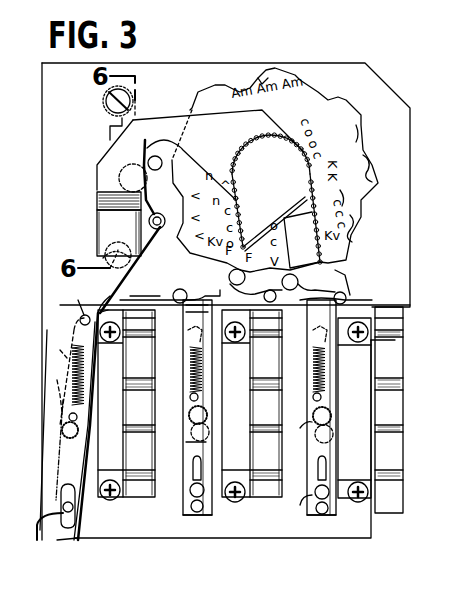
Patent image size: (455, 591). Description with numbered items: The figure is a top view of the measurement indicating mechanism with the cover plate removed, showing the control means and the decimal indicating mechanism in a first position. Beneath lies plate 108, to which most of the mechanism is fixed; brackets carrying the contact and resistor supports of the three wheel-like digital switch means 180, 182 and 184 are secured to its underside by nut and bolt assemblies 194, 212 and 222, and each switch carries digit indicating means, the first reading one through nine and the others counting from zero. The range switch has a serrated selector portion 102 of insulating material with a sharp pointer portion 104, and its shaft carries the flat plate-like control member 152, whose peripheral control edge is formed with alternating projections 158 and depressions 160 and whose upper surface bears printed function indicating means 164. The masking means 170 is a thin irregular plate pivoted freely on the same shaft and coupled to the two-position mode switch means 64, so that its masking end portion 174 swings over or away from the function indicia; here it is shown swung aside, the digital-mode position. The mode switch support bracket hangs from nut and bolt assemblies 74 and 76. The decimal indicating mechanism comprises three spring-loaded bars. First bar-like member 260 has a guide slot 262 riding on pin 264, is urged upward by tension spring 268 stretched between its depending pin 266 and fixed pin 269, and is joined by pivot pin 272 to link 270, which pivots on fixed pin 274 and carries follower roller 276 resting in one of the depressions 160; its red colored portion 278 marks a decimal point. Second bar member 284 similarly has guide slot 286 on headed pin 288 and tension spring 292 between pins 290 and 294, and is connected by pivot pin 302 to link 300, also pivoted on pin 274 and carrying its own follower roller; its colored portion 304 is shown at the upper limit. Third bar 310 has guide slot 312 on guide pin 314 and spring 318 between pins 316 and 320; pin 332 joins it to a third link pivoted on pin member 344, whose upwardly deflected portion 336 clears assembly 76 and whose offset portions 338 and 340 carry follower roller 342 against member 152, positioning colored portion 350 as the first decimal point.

The mode switch means 64 is at (90, 206).
The nut and bolt assembly 74 is at (100, 110).
The nut and bolt assembly 76 is at (92, 253).
The selector portion 102 is at (268, 180).
The pointer portion 104 is at (352, 508).
The plate 108 is at (403, 127).
The flat plate-like member 152 is at (300, 70).
The projections 158 is at (374, 168).
The depressions 160 is at (364, 124).
The notch 164 is at (262, 82).
The masking means 170 is at (162, 118).
The masking end portion 174 is at (302, 235).
The digital switch means 180 is at (122, 520).
The digital switch means 182 is at (254, 520).
The digital switch means 184 is at (390, 518).
The nut and bolt assemblies 194 is at (392, 342).
The nut and bolt assemblies 212 is at (246, 340).
The nut and bolt assemblies 222 is at (100, 494).
The first bar-like member 260 is at (334, 308).
The guide slot 262 is at (318, 472).
The pin 264 is at (310, 511).
The pin 266 is at (316, 402).
The tension spring 268 is at (318, 378).
The pin 269 is at (314, 332).
The link 270 is at (350, 281).
The pivot pin 272 is at (345, 296).
The pin 274 is at (310, 407).
The follower roller 276 is at (300, 282).
The colored portion 278 is at (298, 432).
The second bar member 284 is at (196, 442).
The elongated guide slot 286 is at (192, 470).
The pin 288 is at (190, 512).
The pin 290 is at (192, 382).
The tension spring 292 is at (190, 336).
The pin 294 is at (186, 407).
The link 300 is at (170, 283).
The follower roller 302 is at (186, 294).
The colored portion 304 is at (194, 404).
The third bar 310 is at (67, 452).
The elongated guide slot 312 is at (52, 536).
The guide pin 314 is at (78, 505).
The pin 316 is at (64, 383).
The tension spring 318 is at (70, 358).
The pin 320 is at (130, 296).
The pin 332 is at (76, 316).
The upwardly deflected portion 336 is at (142, 260).
The offset portion 338 is at (136, 180).
The further offset portion 340 is at (136, 150).
The roller 342 is at (188, 150).
The pin member 344 is at (166, 240).
The colored portion 350 is at (62, 426).